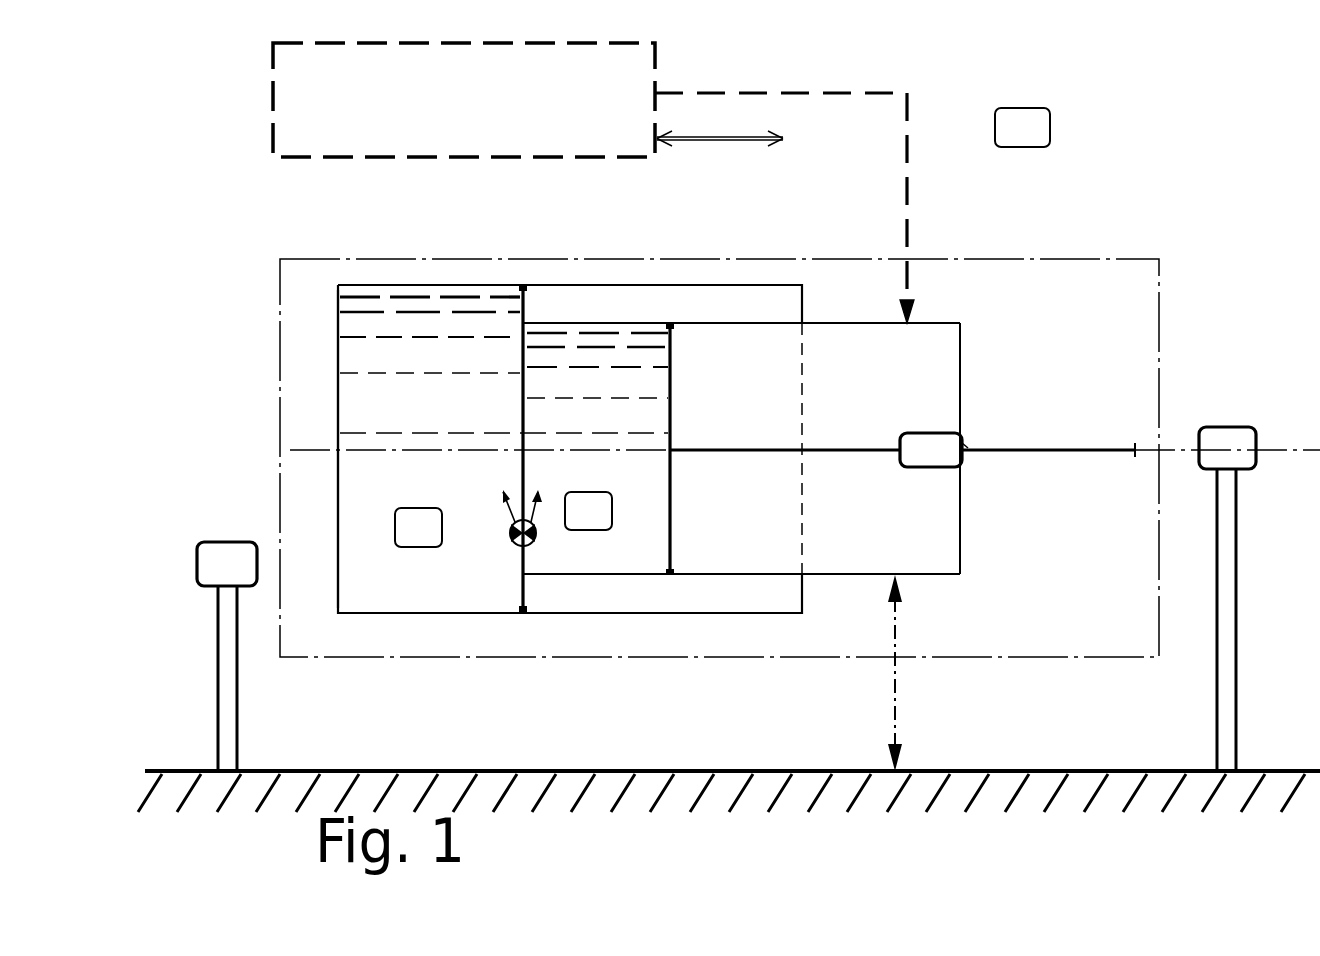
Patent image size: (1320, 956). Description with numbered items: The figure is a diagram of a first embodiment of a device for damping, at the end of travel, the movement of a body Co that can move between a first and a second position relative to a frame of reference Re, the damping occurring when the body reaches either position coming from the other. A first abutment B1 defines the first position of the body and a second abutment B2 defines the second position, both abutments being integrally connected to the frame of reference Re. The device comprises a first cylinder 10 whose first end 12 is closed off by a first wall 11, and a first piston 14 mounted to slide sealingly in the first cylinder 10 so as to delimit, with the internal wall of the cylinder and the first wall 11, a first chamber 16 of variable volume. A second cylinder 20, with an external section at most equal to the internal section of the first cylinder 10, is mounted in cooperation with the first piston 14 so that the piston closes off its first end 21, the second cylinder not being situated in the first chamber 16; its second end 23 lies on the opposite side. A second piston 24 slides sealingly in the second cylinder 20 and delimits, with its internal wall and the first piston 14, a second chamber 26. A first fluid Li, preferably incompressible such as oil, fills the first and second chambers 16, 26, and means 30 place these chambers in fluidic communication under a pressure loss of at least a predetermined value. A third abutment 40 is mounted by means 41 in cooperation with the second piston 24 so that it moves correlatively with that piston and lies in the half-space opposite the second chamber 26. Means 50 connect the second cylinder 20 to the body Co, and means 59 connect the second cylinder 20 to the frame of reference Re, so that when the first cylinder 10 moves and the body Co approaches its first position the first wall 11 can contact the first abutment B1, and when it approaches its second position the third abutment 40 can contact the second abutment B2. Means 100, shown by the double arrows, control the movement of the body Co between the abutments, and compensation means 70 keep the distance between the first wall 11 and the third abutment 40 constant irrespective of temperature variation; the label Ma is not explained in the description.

The first cylinder 10 is at (645, 283).
The first wall 11 is at (338, 398).
The first end 12 is at (350, 282).
The first piston 14 is at (520, 367).
The first chamber 16 is at (418, 527).
The second cylinder 20 is at (812, 323).
The first end 21 is at (532, 323).
The second end 23 is at (940, 323).
The second piston 24 is at (672, 380).
The second chamber 26 is at (588, 511).
The means for placing the chambers in fluidic communication 30 is at (518, 547).
The third abutment 40 is at (1137, 449).
The means for mounting the third abutment 41 is at (972, 448).
The means for connecting the second cylinder to the body 50 is at (912, 172).
The means for connecting the second cylinder to the frame of reference 59 is at (886, 695).
The compensation means 70 is at (916, 447).
The means for controlling the movement of the body 100 is at (695, 137).
The body Co is at (500, 88).
The machine Ma is at (1022, 127).
The first fluid Li is at (535, 367).
The first abutment B1 is at (257, 548).
The second abutment B2 is at (1199, 442).
The frame of reference Re is at (591, 762).